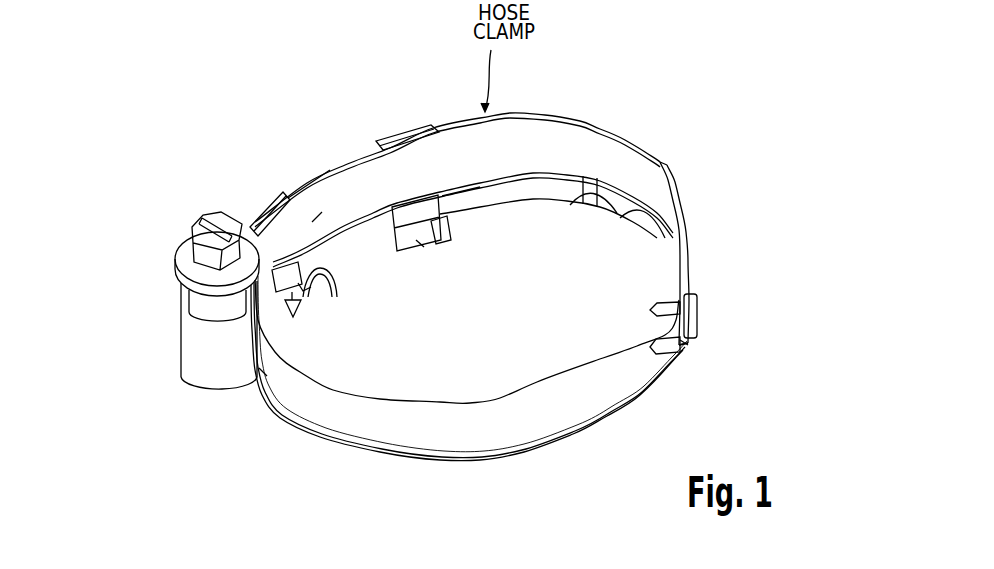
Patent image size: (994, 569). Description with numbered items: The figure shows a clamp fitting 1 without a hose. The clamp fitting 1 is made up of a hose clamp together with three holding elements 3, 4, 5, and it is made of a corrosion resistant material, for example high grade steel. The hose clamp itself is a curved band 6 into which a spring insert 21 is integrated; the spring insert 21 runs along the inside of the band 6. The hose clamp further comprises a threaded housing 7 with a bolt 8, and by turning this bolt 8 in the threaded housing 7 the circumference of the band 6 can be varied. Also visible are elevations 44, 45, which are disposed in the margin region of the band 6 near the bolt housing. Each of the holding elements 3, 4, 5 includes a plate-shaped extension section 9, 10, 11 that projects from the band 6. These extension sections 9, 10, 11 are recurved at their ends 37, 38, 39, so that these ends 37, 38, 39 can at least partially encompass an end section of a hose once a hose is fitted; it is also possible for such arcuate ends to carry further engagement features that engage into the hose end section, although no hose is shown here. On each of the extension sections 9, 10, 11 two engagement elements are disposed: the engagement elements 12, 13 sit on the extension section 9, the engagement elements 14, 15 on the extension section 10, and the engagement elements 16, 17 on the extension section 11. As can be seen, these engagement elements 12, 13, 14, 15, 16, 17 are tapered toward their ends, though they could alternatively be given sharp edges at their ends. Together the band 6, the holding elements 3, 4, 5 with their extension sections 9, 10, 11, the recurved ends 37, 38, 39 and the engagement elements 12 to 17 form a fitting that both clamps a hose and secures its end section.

The clamp fitting 1 is at (291, 122).
The holding element 3 is at (248, 199).
The holding element 4 is at (404, 112).
The holding element 5 is at (723, 322).
The curved band 6 is at (508, 455).
The threaded housing 7 is at (190, 340).
The bolt 8 is at (195, 229).
The extension section 9 is at (297, 280).
The extension section 10 is at (450, 223).
The extension section 11 is at (690, 347).
The engagement element 12 is at (293, 317).
The engagement element 13 is at (321, 290).
The engagement element 14 is at (398, 250).
The engagement element 15 is at (453, 233).
The engagement element 16 is at (655, 300).
The engagement element 17 is at (598, 322).
The spring insert 21 is at (567, 174).
The end 37 is at (263, 372).
The end 38 is at (420, 243).
The end 39 is at (690, 353).
The elevation 44 is at (317, 233).
The elevation 45 is at (307, 183).